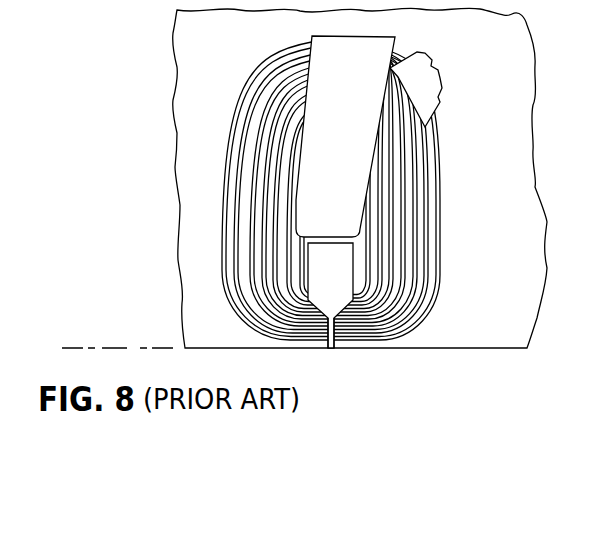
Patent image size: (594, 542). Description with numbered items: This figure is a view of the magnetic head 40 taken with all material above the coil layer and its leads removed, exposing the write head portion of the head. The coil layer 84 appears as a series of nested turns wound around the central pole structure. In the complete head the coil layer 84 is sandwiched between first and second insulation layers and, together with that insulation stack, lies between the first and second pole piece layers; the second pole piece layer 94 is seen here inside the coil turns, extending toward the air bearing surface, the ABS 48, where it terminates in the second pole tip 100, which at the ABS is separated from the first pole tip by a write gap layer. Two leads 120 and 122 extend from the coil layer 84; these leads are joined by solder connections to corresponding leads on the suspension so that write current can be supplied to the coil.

The magnetic head 40 is at (449, 170).
The ABS 48 is at (118, 346).
The coil layer 84 is at (422, 248).
The second pole piece layer 94 is at (344, 287).
The second pole tip 100 is at (332, 350).
The lead 120 is at (353, 134).
The lead 122 is at (433, 64).